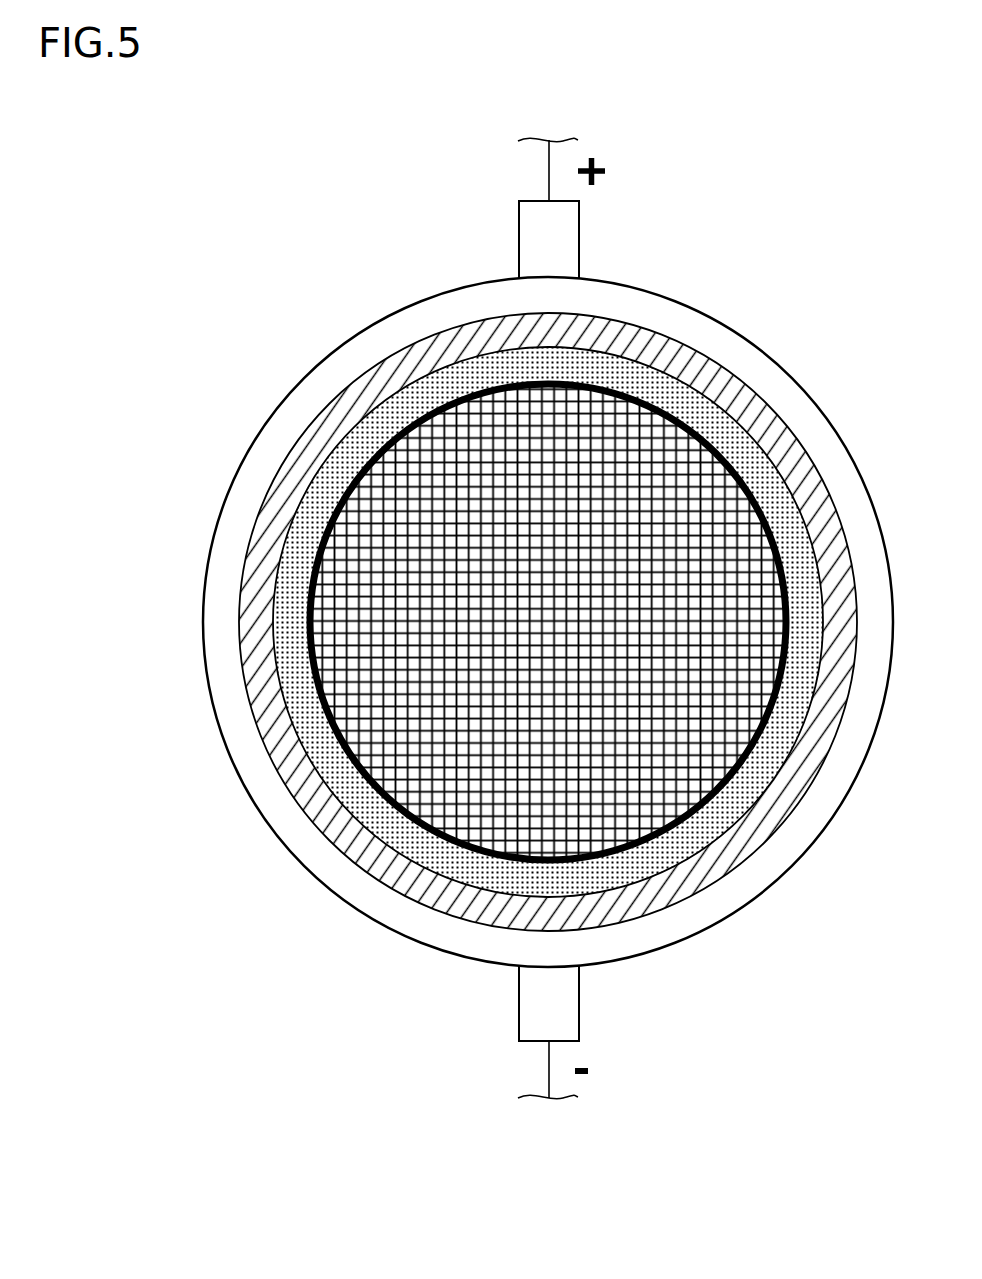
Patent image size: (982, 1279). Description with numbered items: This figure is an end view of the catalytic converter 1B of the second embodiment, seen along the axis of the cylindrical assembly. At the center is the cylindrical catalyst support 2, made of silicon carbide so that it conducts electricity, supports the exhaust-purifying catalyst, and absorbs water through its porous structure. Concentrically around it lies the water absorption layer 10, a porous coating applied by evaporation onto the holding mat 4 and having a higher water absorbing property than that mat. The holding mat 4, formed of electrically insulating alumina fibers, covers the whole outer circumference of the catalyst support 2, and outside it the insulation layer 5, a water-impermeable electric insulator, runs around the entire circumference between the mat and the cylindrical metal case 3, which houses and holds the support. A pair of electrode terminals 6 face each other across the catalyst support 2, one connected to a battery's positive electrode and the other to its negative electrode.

The catalytic converter 1B is at (272, 285).
The catalyst support 2 is at (430, 700).
The case 3 is at (638, 300).
The holding mat 4 is at (742, 450).
The insulation layer 5 is at (697, 372).
The electrode terminal 6 is at (519, 237).
The water absorption layer 10 is at (388, 846).